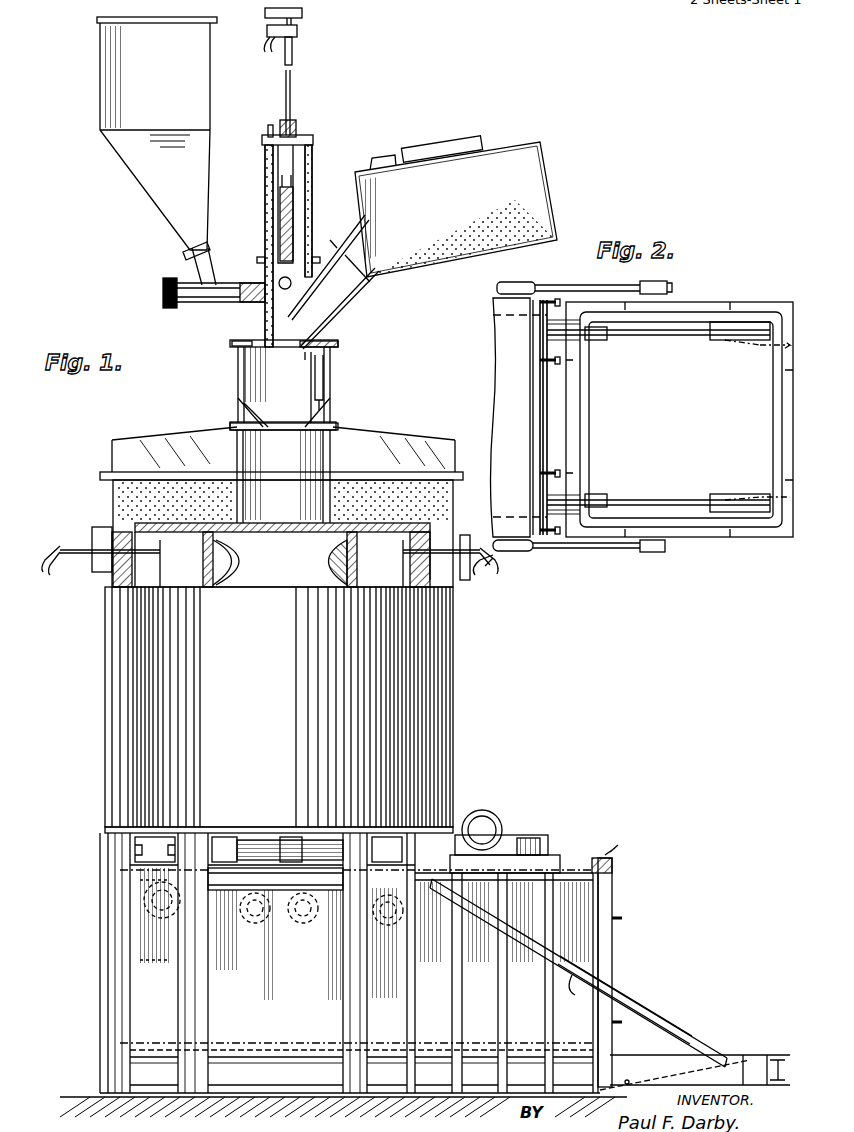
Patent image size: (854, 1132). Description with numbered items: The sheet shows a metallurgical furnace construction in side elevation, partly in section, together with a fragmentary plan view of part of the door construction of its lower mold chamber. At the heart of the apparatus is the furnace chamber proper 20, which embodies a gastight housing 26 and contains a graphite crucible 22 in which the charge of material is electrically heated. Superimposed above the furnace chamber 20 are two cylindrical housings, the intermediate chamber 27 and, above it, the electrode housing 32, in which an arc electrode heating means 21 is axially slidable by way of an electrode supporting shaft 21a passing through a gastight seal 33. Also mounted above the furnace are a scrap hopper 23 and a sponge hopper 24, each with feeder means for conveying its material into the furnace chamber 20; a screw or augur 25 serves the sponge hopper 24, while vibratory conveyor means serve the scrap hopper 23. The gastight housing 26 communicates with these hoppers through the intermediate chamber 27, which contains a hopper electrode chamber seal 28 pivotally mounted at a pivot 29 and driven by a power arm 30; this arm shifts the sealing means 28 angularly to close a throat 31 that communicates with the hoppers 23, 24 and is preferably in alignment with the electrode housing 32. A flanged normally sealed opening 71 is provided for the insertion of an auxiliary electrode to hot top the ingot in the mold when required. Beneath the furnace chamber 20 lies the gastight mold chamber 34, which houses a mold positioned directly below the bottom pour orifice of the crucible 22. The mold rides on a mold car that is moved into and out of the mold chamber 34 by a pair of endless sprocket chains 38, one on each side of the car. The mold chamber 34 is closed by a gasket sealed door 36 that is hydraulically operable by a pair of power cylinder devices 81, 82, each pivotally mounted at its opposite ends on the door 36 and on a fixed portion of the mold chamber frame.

In FIG. 1, the furnace chamber proper 20 is at (455, 672).
In FIG. 1, the arc electrode heating means 21 is at (282, 202).
In FIG. 1, the electrode supporting shaft 21a is at (292, 78).
In FIG. 1, the graphite crucible 22 is at (358, 560).
In FIG. 1, the scrap hopper 23 is at (540, 170).
In FIG. 1, the sponge hopper 24 is at (103, 78).
In FIG. 1, the screw or augur 25 is at (250, 302).
In FIG. 1, the gastight housing 26 is at (113, 500).
In FIG. 1, the intermediate chamber 27 is at (238, 380).
In FIG. 1, the hopper electrode chamber seal 28 is at (324, 368).
In FIG. 1, the pivot 29 is at (322, 340).
In FIG. 1, the power arm 30 is at (331, 398).
In FIG. 1, the throat 31 is at (240, 343).
In FIG. 1, the electrode housing 32 is at (270, 219).
In FIG. 1, the gastight seal 33 is at (296, 126).
In FIG. 1, the mold chamber 34 is at (94, 938).
In FIG. 2, the mold chamber 34 is at (487, 379).
In FIG. 1, the gasket sealed door 36 is at (612, 940).
In FIG. 2, the sprocket chains 38 is at (690, 340).
In FIG. 1, the flanged normally sealed opening 71 is at (522, 835).
In FIG. 2, the hydraulically operable power cylinder device 81 is at (530, 286).
In FIG. 1, the hydraulically operable power cylinder device 82 is at (662, 982).
In FIG. 2, the hydraulically operable power cylinder device 82 is at (530, 556).